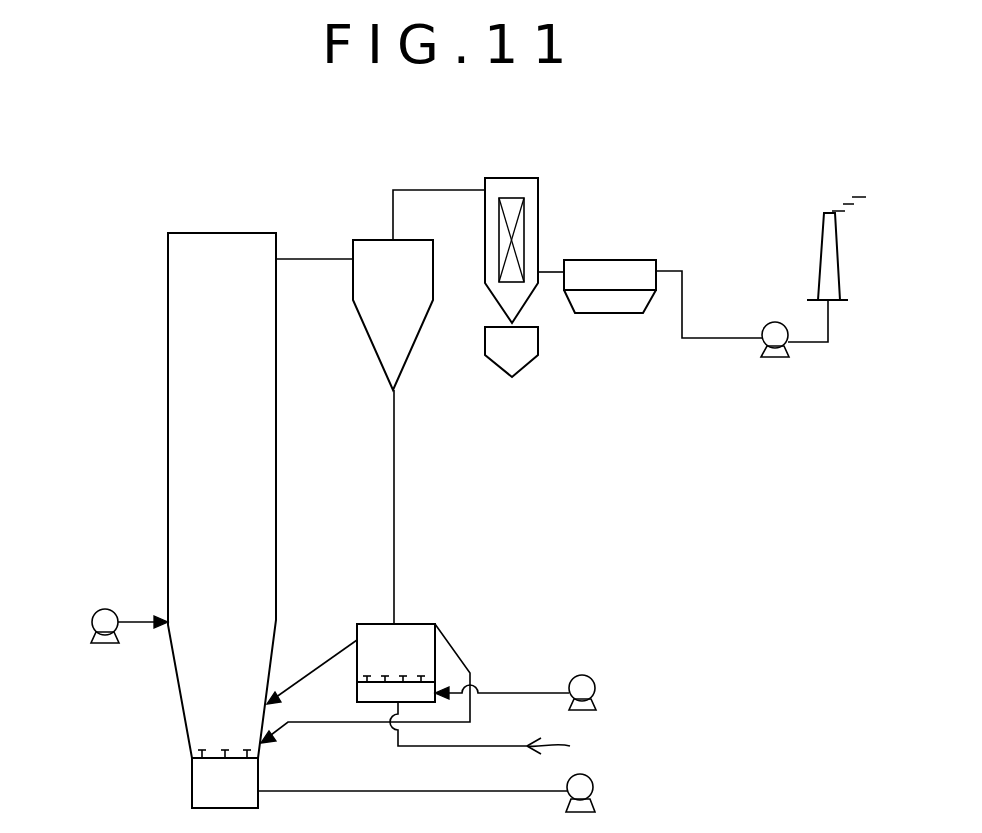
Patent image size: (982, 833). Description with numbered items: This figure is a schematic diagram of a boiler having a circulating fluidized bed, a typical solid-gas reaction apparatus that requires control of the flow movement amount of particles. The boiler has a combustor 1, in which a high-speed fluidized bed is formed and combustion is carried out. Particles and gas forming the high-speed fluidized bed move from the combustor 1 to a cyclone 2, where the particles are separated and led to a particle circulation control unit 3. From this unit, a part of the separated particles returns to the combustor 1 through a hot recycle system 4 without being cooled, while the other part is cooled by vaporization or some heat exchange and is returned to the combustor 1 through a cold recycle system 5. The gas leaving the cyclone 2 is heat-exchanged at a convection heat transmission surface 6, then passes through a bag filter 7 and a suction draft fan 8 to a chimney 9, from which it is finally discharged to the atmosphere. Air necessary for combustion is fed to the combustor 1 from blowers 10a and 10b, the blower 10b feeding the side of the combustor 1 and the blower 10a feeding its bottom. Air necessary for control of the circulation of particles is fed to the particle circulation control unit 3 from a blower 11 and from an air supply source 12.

The combustor 1 is at (194, 233).
The cyclone 2 is at (413, 347).
The particle circulation control unit 3 is at (420, 624).
The hot recycle system 4 is at (330, 655).
The cold recycle system 5 is at (458, 663).
The convection heat transmission surface 6 is at (509, 178).
The bag filter 7 is at (590, 260).
The suction draft fan 8 is at (770, 337).
The chimney 9 is at (840, 256).
The blower 10a is at (594, 785).
The blower 10b is at (93, 616).
The blower 11 is at (596, 682).
The air supply source 12 is at (504, 731).